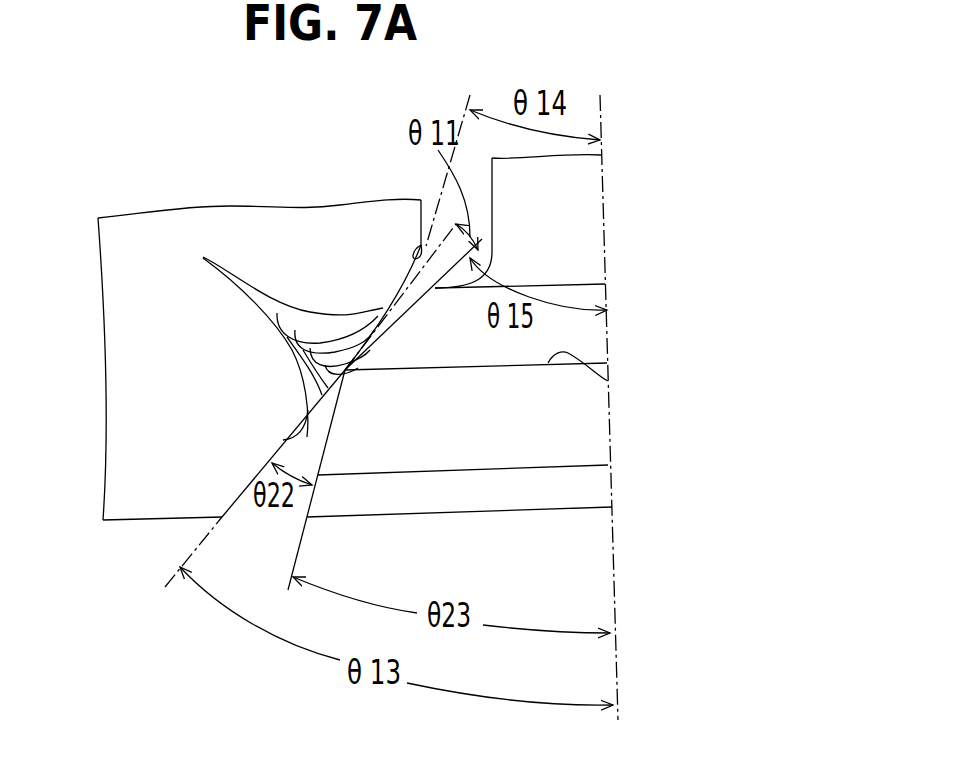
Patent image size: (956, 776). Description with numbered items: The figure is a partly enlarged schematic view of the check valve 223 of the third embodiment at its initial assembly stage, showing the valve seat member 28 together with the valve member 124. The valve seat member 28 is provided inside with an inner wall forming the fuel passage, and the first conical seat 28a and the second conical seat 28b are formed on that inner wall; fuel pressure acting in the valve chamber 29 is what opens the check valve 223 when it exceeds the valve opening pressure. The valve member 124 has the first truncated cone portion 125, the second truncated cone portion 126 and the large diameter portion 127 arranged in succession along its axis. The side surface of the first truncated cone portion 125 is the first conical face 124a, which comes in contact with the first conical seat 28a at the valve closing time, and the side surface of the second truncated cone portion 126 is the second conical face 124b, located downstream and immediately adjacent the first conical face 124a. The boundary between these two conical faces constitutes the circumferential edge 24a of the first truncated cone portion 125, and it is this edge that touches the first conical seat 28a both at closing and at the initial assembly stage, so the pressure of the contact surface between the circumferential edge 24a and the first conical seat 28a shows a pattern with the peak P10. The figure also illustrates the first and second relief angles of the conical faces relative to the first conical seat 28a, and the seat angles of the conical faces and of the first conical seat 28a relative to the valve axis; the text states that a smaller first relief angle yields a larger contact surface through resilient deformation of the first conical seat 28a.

The valve seat member 28 is at (153, 232).
The first conical seat 28a is at (290, 440).
The second conical seat 28b is at (421, 252).
The valve chamber 29 is at (433, 237).
The valve member 124 is at (607, 260).
The first conical face 124a is at (397, 302).
The second conical face 124b is at (322, 452).
The first truncated cone portion 125 is at (593, 338).
The second truncated cone portion 126 is at (595, 432).
The large diameter portion 127 is at (597, 487).
The check valve 223 is at (607, 237).
The circumferential edge 24a is at (608, 381).
The peak P10 is at (240, 266).